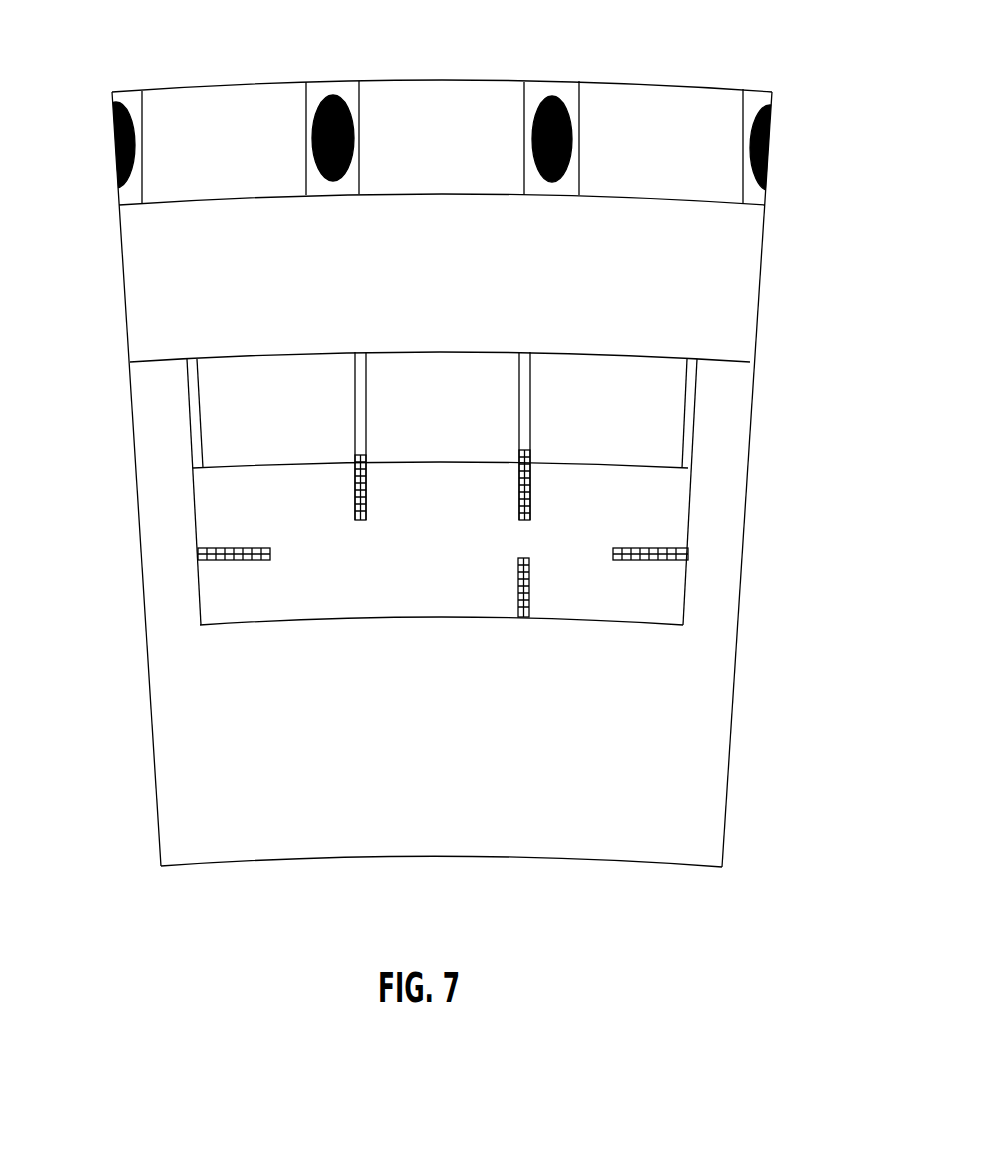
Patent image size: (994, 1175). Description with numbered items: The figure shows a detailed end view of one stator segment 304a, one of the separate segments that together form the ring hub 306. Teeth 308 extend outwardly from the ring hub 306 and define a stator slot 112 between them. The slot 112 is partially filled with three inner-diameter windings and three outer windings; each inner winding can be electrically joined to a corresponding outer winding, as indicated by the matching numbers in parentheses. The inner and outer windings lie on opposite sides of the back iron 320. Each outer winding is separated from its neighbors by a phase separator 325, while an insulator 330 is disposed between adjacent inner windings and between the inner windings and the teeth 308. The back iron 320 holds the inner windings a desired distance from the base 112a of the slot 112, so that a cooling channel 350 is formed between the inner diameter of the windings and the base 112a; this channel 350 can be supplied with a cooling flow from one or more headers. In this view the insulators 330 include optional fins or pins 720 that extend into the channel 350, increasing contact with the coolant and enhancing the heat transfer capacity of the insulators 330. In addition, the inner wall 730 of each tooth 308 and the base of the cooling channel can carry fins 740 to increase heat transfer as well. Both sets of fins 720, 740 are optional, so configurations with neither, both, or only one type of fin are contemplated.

The stator slot 112 is at (660, 627).
The base of the slot 112a is at (428, 605).
The stator segment 304a is at (152, 760).
The ring hub 306 is at (643, 735).
The tooth 308 is at (158, 517).
The back iron 320 is at (138, 280).
The phase separator 325 is at (128, 95).
The insulator 330 is at (192, 358).
The cooling channel 350 is at (223, 589).
The fins or pins 720 is at (360, 520).
The inner wall of the tooth 730 is at (192, 502).
The fins 740 is at (238, 562).